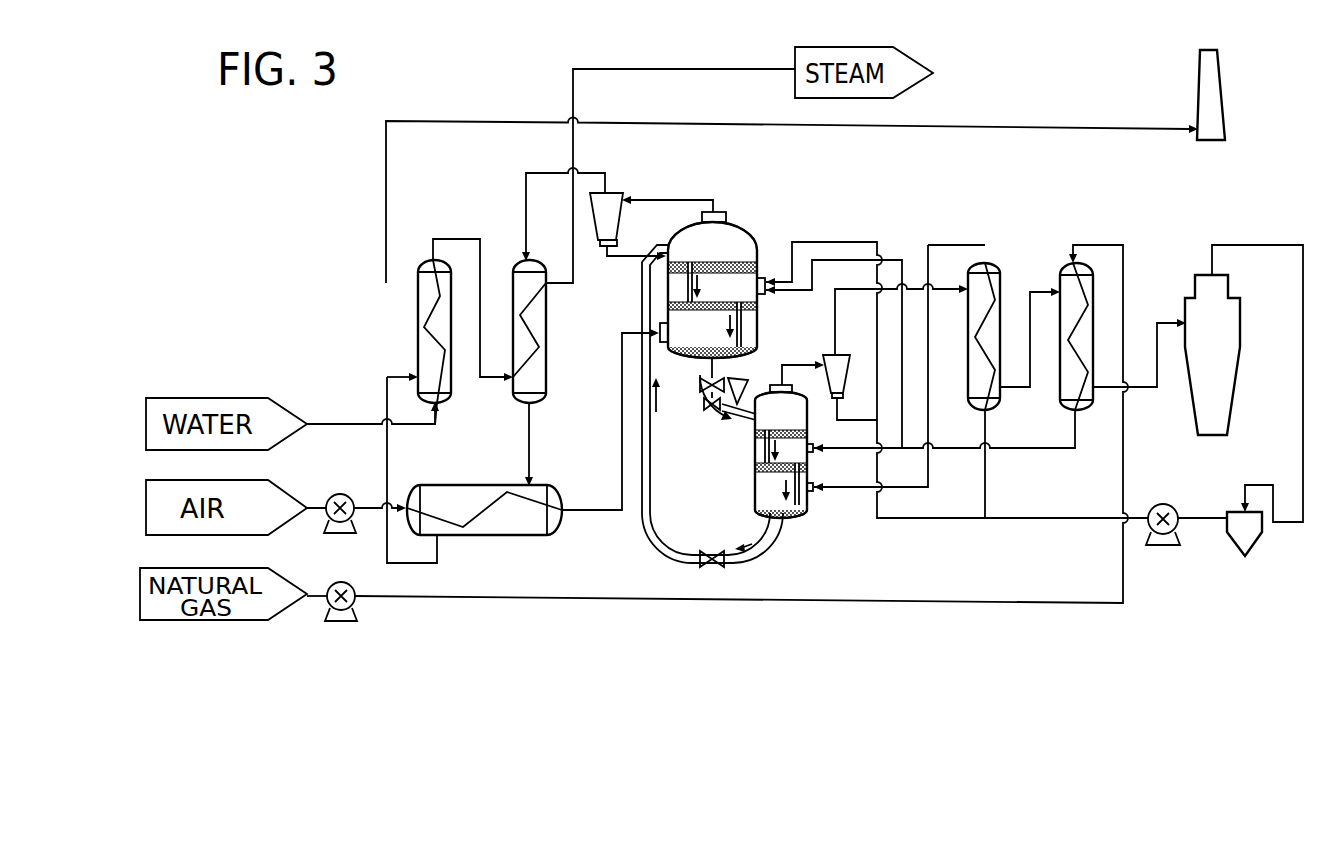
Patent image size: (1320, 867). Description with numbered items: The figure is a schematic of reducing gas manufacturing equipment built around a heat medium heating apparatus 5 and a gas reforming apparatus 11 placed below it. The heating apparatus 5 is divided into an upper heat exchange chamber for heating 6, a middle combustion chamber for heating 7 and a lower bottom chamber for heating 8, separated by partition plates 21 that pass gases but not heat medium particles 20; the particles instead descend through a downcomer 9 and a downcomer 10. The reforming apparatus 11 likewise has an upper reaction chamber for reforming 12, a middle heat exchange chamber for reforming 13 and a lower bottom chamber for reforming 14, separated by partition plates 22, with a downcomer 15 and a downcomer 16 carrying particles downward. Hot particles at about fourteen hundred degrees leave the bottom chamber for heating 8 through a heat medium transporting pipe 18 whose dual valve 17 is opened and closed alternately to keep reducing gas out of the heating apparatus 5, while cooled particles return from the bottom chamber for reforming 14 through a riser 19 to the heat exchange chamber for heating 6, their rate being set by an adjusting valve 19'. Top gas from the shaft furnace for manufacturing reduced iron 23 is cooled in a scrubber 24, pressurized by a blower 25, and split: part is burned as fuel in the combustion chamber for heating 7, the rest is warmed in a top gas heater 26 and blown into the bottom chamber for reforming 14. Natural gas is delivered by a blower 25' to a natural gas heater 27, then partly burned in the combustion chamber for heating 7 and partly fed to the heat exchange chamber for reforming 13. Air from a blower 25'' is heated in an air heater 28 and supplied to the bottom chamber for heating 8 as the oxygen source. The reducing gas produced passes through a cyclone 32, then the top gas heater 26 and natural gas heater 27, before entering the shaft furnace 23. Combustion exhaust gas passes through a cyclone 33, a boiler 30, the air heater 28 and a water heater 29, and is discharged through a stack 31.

The heat medium heating apparatus 5 is at (745, 222).
The heat exchange chamber for heating 6 is at (748, 240).
The combustion chamber for heating 7 is at (758, 290).
The bottom chamber for heating 8 is at (682, 342).
The downcomer 9 is at (688, 275).
The downcomer 10 is at (778, 384).
The gas reforming apparatus 11 is at (793, 365).
The reaction chamber for reforming 12 is at (802, 368).
The heat exchange chamber for reforming 13 is at (796, 456).
The bottom chamber for reforming 14 is at (758, 498).
The downcomer 15 is at (764, 447).
The downcomer 16 is at (808, 497).
The dual valve 17 is at (744, 388).
The heat medium transporting pipe 18 is at (717, 366).
The riser 19 is at (712, 404).
The adjusting valve 19' is at (693, 538).
The heat medium particles 20 is at (712, 262).
The partition plate 21 is at (700, 272).
The partition plate 22 is at (808, 433).
The shaft furnace for manufacturing reduced iron 23 is at (1240, 318).
The scrubber 24 is at (1256, 545).
The blower 25 is at (1166, 500).
The blower 25' is at (348, 577).
The blower 25'' is at (351, 490).
The top gas heater 26 is at (970, 388).
The natural gas heater 27 is at (1058, 398).
The air heater 28 is at (478, 485).
The water heater 29 is at (418, 325).
The boiler 30 is at (546, 323).
The stack 31 is at (1219, 100).
The cyclone 32 is at (853, 355).
The cyclone 33 is at (624, 223).